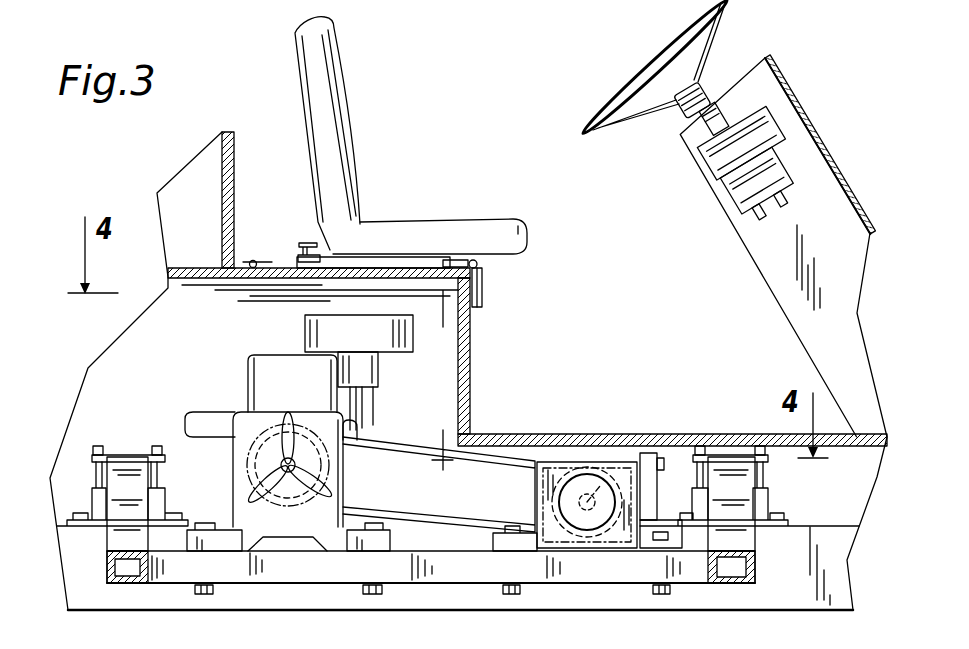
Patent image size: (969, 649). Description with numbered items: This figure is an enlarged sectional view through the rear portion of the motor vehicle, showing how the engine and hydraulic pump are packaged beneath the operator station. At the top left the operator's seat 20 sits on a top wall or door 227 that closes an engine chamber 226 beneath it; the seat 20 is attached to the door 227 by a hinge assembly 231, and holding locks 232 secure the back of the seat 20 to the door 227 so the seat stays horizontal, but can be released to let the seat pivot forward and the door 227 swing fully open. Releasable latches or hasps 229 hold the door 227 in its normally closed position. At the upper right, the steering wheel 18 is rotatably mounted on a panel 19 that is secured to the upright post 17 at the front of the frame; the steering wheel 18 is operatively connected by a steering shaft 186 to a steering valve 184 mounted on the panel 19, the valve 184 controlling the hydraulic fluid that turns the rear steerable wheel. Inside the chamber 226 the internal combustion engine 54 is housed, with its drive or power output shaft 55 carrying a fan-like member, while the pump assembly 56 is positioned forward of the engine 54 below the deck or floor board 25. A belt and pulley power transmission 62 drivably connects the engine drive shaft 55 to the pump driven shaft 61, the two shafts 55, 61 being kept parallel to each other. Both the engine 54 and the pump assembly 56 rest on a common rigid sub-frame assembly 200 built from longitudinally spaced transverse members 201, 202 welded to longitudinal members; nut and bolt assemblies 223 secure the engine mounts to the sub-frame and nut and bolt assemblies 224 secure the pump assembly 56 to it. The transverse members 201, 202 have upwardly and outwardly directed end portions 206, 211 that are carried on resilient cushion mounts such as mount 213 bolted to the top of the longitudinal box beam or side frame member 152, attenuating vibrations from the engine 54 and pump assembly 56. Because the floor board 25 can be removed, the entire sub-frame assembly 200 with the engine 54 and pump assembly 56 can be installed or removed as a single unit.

The upright post 17 is at (766, 96).
The steering wheel 18 is at (668, 58).
The panel 19 is at (768, 124).
The steering valve 184 is at (780, 160).
The steering shaft 186 is at (704, 112).
The seat 20 is at (340, 121).
The door 227 is at (390, 266).
The holding locks 232 is at (298, 243).
The hinge assembly 231 is at (480, 266).
The releasable latches 229 is at (483, 296).
The engine chamber 226 is at (262, 336).
The floor board 25 is at (655, 434).
The internal combustion engine 54 is at (242, 457).
The drive shaft 55 is at (270, 430).
The belt and pulley power transmission 62 is at (402, 446).
The pump assembly 56 is at (571, 460).
The driven shaft 61 is at (600, 486).
The sub-frame assembly 200 is at (119, 450).
The end portion 206 is at (122, 532).
The transverse member 202 is at (135, 586).
The transverse member 201 is at (734, 586).
The end portion 211 is at (735, 493).
The mount 213 is at (724, 452).
The nut and bolt assemblies 223 is at (372, 596).
The nut and bolt assemblies 224 is at (661, 596).
The side frame member 152 is at (88, 583).